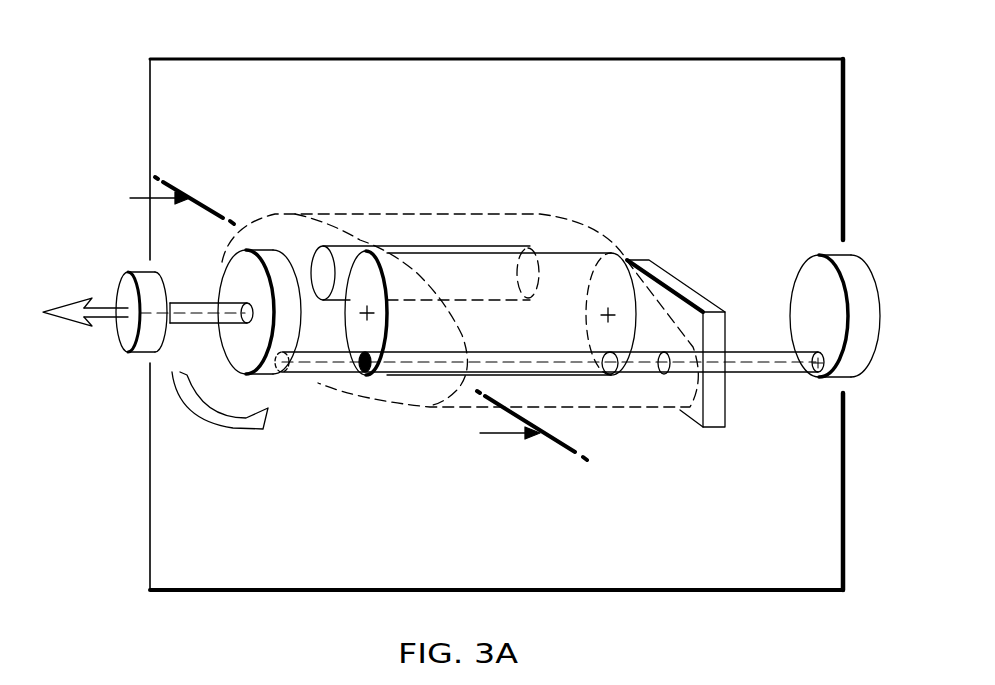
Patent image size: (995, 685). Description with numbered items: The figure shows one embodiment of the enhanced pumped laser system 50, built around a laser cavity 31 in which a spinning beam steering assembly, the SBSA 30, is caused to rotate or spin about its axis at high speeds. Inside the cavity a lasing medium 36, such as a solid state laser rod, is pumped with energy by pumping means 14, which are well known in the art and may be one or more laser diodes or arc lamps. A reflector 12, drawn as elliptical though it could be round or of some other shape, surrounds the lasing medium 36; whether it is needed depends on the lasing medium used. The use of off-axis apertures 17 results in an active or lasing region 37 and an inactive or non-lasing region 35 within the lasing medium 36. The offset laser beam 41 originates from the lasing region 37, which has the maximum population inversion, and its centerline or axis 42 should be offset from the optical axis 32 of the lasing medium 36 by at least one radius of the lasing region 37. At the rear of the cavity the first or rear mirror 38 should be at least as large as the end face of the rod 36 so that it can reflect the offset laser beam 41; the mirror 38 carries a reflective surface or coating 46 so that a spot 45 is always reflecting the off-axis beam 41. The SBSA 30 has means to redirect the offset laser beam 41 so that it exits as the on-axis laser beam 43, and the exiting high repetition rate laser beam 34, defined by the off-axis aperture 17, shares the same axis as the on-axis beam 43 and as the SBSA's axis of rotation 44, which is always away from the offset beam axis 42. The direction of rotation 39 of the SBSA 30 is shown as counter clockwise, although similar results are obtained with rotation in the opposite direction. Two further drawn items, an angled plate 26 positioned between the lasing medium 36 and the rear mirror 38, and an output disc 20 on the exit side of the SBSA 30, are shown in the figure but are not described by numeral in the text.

The enhanced pumped laser system 50 is at (136, 78).
The laser cavity 31 is at (785, 60).
The reflector 12 is at (262, 216).
The pumping means 14 is at (413, 246).
The optical axis 32 is at (348, 298).
The inactive or non-lasing region 35 is at (357, 277).
The lasing medium 36 is at (608, 253).
The mirror plate 26 is at (650, 268).
The reflective surface or coating 46 is at (807, 287).
The mirror 38 is at (848, 365).
The high repetition rate laser beam 34 is at (102, 303).
The on-axis laser beam 43 is at (190, 303).
The output disc 20 is at (128, 340).
The axis of rotation 44 is at (205, 322).
The spinning beam steering assembly 30 is at (241, 360).
The direction of rotation 39 is at (208, 425).
The off-axis aperture 17 is at (280, 373).
The offset laser beam 41 is at (325, 378).
The active or lasing region 37 is at (362, 373).
The offset laser beam axis 42 is at (342, 377).
The spot 45 is at (810, 373).